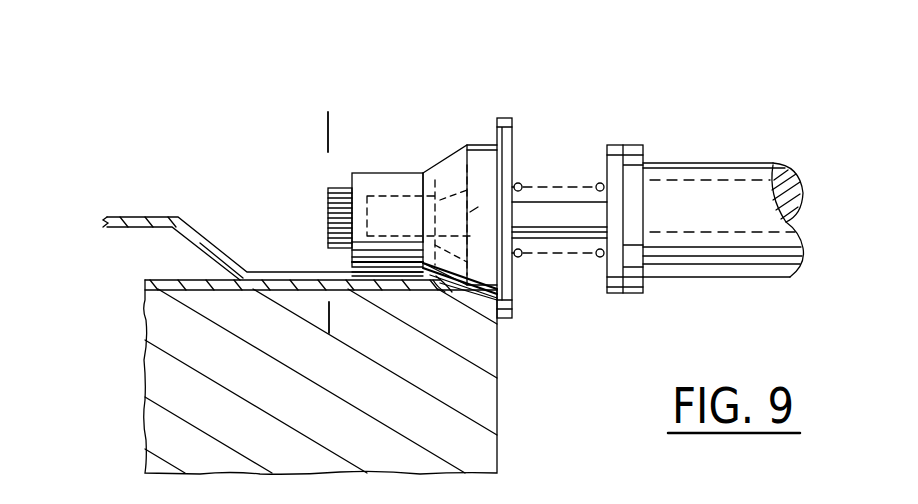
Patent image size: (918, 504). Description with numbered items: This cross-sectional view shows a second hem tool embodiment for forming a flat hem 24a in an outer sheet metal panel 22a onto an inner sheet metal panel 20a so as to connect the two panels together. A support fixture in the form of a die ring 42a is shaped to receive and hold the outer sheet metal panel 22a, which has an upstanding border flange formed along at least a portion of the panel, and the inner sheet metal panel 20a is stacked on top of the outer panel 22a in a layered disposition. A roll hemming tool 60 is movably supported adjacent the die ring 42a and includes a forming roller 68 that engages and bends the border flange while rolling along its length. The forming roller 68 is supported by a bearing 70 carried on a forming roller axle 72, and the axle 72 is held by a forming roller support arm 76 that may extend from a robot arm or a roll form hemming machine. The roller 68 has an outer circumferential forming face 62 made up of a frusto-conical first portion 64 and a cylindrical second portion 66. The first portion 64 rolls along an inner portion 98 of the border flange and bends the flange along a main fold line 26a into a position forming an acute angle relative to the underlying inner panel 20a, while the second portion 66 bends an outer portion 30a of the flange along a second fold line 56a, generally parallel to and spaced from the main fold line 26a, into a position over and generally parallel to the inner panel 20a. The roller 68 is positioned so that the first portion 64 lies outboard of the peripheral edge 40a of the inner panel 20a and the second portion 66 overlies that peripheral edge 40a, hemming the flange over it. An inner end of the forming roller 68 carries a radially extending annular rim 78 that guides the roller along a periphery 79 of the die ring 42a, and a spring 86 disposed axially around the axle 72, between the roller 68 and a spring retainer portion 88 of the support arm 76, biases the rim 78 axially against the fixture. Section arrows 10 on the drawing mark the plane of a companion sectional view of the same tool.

The section line indicator 10 is at (327, 125).
The inner sheet metal panel 20a is at (137, 218).
The outer sheet metal panel 22a is at (187, 290).
The flat hem 24a is at (394, 252).
The first fold line 26a is at (447, 291).
The outer portion of the border flange 30a is at (357, 270).
The peripheral edge of the inner sheet metal panel 40a is at (430, 283).
The die ring 42a is at (485, 415).
The second fold line 56a is at (425, 250).
The roll hemming tool 60 is at (532, 57).
The forming face 62 is at (438, 155).
The frusto-conical first portion 64 is at (447, 180).
The cylindrical second portion 66 is at (365, 180).
The forming roller 68 is at (342, 176).
The bearing 70 is at (478, 207).
The forming roller axle 72 is at (570, 210).
The forming roller support arm 76 is at (752, 170).
The radially-extending annular rim 78 is at (506, 117).
The periphery of the fixture 79 is at (498, 298).
The spring 86 is at (565, 257).
The spring retainer portion 88 is at (615, 290).
The inner portion of the border flange 98 is at (440, 292).